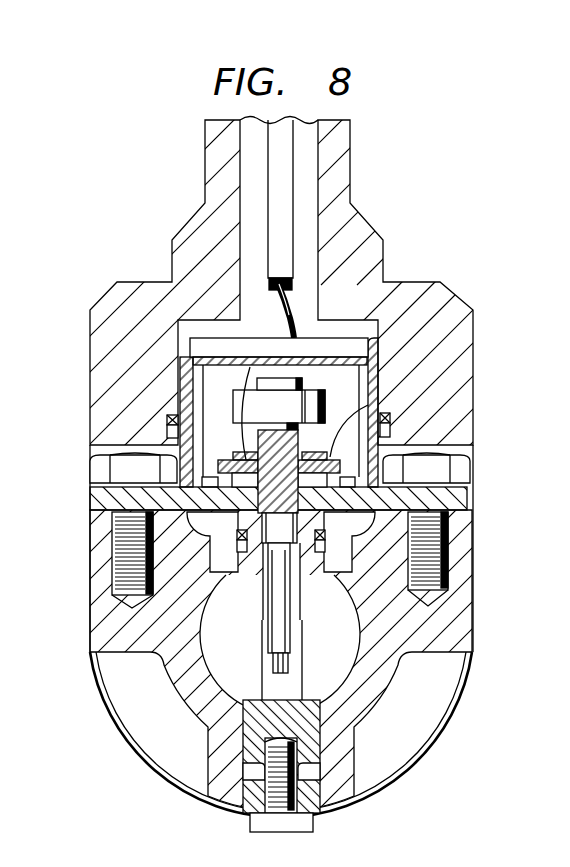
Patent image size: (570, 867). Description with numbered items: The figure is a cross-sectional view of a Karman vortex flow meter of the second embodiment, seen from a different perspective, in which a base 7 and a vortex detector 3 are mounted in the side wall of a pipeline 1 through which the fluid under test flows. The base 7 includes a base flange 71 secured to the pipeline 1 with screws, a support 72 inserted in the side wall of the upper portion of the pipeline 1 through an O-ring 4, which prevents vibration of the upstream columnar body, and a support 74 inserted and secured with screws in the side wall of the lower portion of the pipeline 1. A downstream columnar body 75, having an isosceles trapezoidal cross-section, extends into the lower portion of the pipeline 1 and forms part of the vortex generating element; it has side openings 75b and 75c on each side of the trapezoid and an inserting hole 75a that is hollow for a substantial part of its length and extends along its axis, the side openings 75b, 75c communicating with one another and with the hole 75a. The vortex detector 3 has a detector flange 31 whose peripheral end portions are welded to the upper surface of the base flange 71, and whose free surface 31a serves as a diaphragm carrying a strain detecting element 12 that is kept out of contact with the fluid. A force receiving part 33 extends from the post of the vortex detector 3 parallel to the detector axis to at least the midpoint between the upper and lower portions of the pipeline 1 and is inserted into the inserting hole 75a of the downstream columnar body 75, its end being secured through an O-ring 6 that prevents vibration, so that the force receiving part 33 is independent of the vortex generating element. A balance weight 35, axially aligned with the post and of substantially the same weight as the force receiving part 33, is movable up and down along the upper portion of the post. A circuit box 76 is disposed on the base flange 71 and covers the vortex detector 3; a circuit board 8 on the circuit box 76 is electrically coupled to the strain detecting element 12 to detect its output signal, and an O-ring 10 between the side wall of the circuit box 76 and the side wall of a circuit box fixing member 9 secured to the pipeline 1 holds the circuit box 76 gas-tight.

The pipeline 1 is at (345, 738).
The vortex detector 3 is at (331, 381).
The O-ring 4 is at (320, 543).
The O-ring 6 is at (300, 660).
The base 7 is at (479, 495).
The circuit board 8 is at (340, 347).
The circuit box fixing member 9 is at (470, 306).
The O-ring 10 is at (195, 408).
The strain detecting element 12 is at (388, 425).
The detector flange 31 is at (240, 462).
The free surface 31a is at (215, 440).
The force receiving part 33 is at (255, 580).
The balance weight 35 is at (250, 392).
The base flange 71 is at (107, 503).
The support 72 is at (245, 537).
The support 74 is at (250, 740).
The downstream columnar body 75 is at (358, 677).
The inserting hole 75a is at (333, 598).
The side opening 75b is at (263, 632).
The side opening 75c is at (333, 623).
The circuit box 76 is at (392, 437).